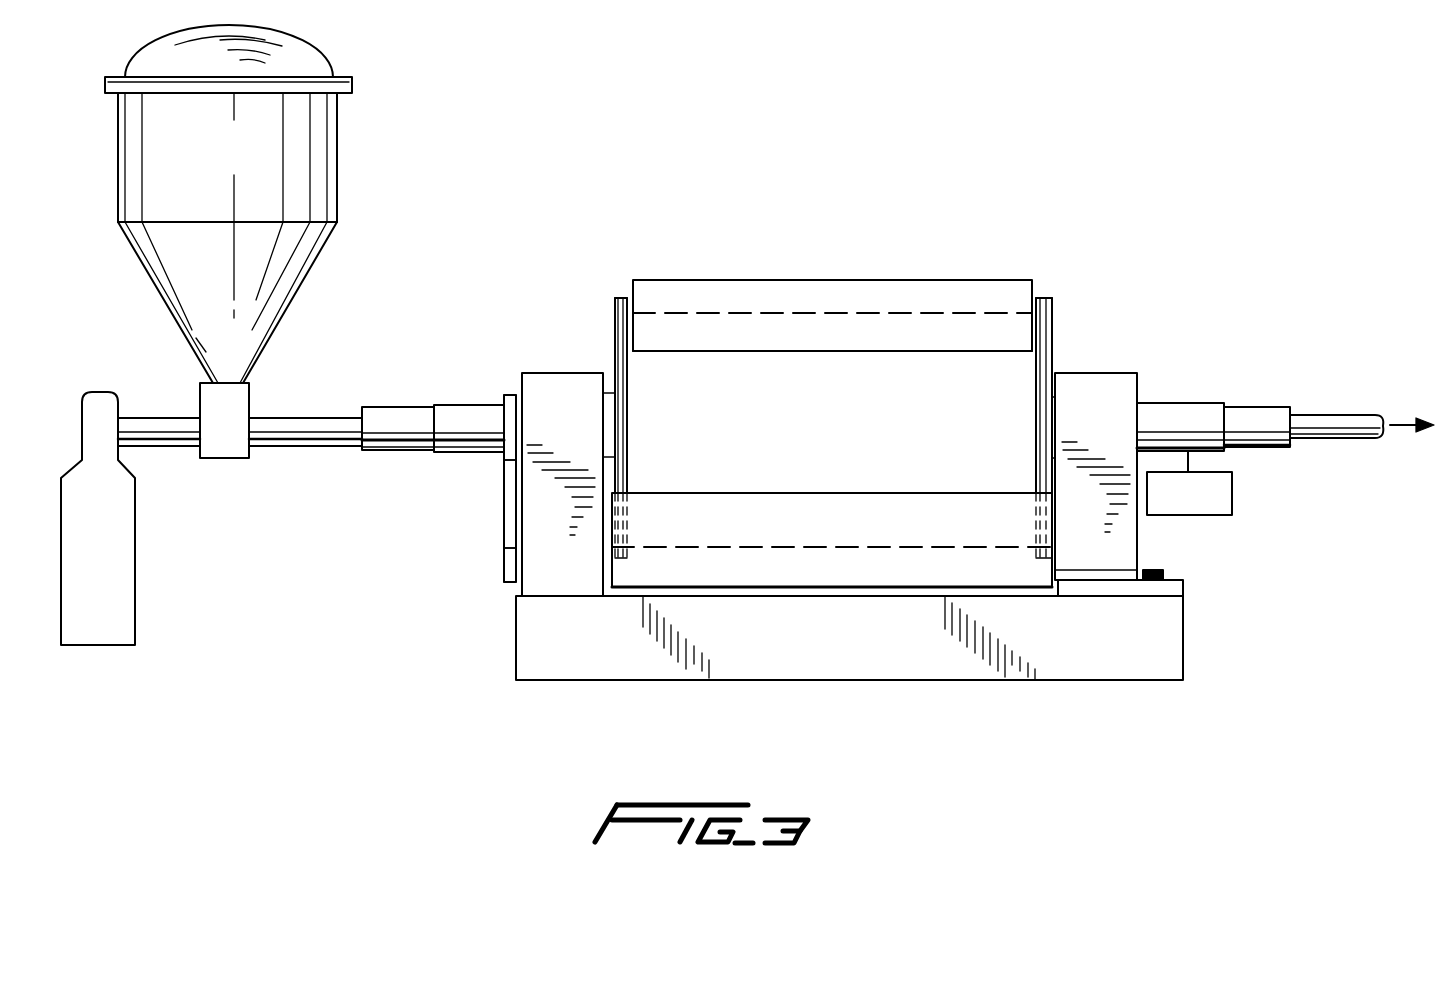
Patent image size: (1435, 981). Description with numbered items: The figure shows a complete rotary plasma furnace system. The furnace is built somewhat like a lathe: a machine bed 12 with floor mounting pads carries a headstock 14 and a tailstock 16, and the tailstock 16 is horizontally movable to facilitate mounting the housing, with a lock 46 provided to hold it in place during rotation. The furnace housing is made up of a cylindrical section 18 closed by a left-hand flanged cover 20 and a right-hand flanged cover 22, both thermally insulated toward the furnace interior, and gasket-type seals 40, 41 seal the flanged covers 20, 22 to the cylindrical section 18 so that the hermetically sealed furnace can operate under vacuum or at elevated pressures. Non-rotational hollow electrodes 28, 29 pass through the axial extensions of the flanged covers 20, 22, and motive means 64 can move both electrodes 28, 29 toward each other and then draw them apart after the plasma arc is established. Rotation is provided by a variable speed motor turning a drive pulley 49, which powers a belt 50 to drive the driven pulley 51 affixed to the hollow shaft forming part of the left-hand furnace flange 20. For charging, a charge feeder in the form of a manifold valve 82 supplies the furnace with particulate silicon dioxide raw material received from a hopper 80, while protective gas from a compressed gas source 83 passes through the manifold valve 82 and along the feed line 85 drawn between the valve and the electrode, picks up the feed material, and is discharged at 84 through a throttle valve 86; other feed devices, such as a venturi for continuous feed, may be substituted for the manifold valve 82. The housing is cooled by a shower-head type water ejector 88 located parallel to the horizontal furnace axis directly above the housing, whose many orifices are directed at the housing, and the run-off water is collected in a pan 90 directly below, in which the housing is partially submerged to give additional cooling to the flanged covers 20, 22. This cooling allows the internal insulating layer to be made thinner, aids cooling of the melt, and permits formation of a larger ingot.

The machine bed 12 is at (1183, 645).
The headstock 14 is at (567, 373).
The tailstock 16 is at (1097, 373).
The cylindrical section 18 is at (853, 313).
The left-hand flanged cover 20 is at (615, 298).
The right-hand flanged cover 22 is at (1052, 318).
The electrode 28 is at (447, 405).
The electrode 29 is at (1182, 403).
The gasket-type seal 40 is at (623, 298).
The gasket-type seal 41 is at (1047, 298).
The lock 46 is at (1157, 570).
The drive pulley 49 is at (504, 576).
The belt 50 is at (504, 508).
The driven pulley 51 is at (503, 393).
The motive means 64 is at (1210, 509).
The hopper 80 is at (258, 166).
The manifold valve 82 is at (245, 440).
The compressed gas source 83 is at (113, 571).
The gas discharge 84 is at (1406, 422).
The feed tube 85 is at (323, 447).
The throttle valve 86 is at (1285, 450).
The water ejector 88 is at (845, 351).
The pan 90 is at (763, 493).